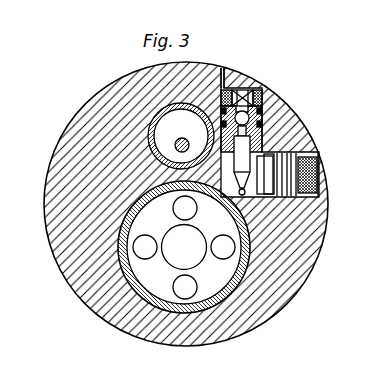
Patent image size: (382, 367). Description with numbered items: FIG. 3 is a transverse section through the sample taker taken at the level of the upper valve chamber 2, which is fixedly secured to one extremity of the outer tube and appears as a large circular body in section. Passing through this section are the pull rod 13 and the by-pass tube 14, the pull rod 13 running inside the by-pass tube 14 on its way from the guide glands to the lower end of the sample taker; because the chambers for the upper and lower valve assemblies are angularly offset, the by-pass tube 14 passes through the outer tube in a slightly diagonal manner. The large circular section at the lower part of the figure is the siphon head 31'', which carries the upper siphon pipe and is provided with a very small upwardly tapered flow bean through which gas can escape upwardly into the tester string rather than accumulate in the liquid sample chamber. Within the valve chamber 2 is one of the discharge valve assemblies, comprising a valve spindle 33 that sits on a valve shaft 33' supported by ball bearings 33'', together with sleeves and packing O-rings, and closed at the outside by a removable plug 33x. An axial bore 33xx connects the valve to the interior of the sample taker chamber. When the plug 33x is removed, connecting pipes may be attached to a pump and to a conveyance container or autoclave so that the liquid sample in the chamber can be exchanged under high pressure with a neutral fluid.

The valve chamber 2 is at (303, 247).
The pull rod 13 is at (175, 147).
The by-pass tube 14 is at (150, 132).
The siphon head 31'' is at (196, 270).
The valve spindle 33 is at (289, 145).
The valve shaft 33' is at (257, 78).
The ball bearings 33'' is at (266, 110).
The plug 33x is at (320, 189).
The axial bore 33xx is at (244, 195).